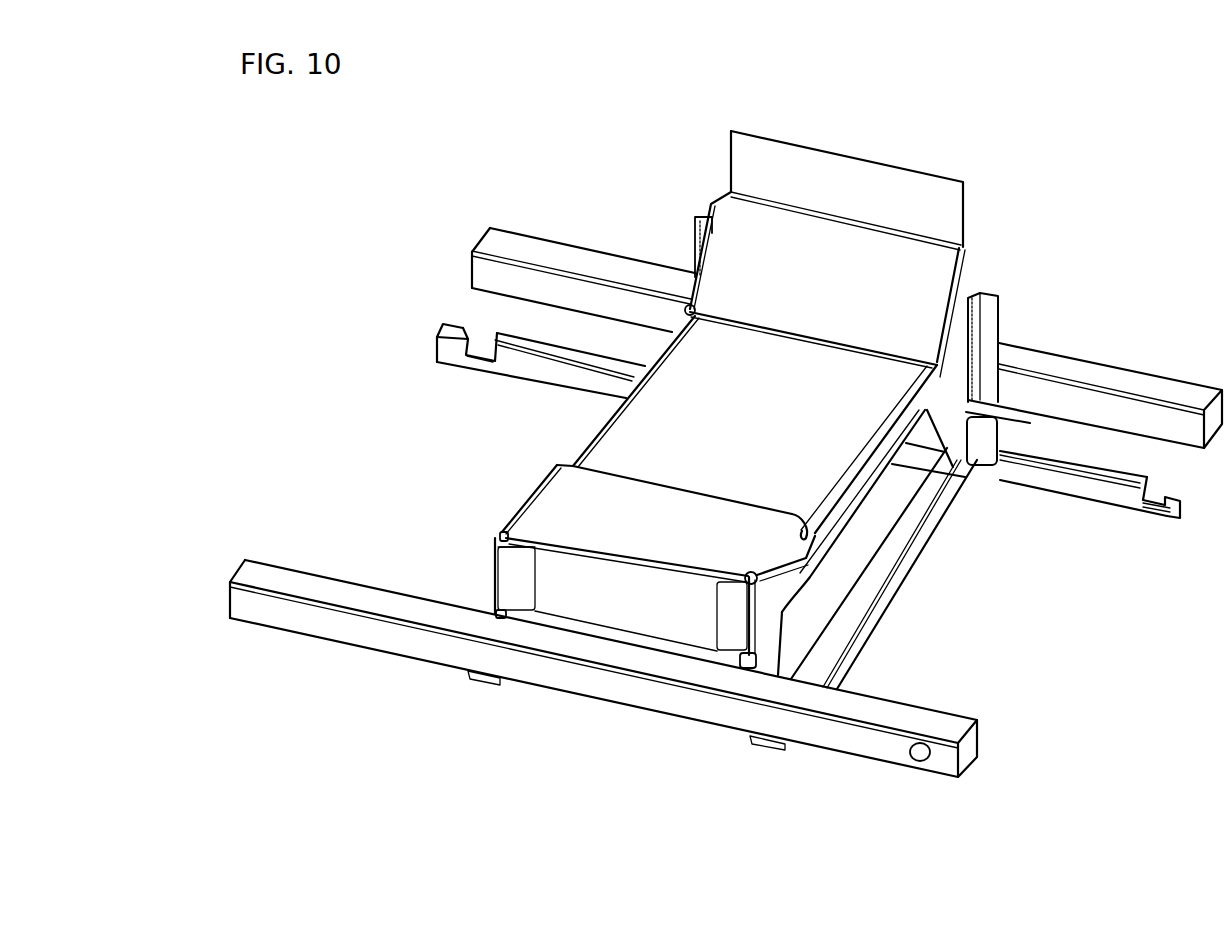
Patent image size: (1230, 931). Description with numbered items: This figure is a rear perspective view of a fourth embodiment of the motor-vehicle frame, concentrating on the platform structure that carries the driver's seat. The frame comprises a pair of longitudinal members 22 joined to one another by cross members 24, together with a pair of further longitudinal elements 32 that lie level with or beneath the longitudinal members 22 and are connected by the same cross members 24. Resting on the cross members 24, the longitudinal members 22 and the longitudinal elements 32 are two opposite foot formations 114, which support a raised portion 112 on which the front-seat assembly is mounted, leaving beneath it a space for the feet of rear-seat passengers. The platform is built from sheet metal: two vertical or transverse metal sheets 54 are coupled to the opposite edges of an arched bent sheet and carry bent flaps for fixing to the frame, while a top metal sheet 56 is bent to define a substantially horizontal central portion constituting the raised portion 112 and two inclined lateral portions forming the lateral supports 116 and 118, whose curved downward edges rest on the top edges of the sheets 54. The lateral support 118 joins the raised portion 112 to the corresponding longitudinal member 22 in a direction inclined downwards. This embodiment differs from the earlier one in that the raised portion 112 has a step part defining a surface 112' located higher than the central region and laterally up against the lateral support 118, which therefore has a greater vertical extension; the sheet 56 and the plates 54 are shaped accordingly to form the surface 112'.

The longitudinal members 22 is at (1160, 388).
The cross members 24 is at (877, 581).
The further longitudinal elements 32 is at (1117, 497).
The transverse metal sheets 54 is at (958, 343).
The top metal sheet 56 is at (628, 447).
The raised portion 112 is at (888, 511).
The step surface 112' is at (496, 514).
The foot formations 114 is at (950, 412).
The lateral support 116 is at (762, 233).
The lateral support 118 is at (607, 600).